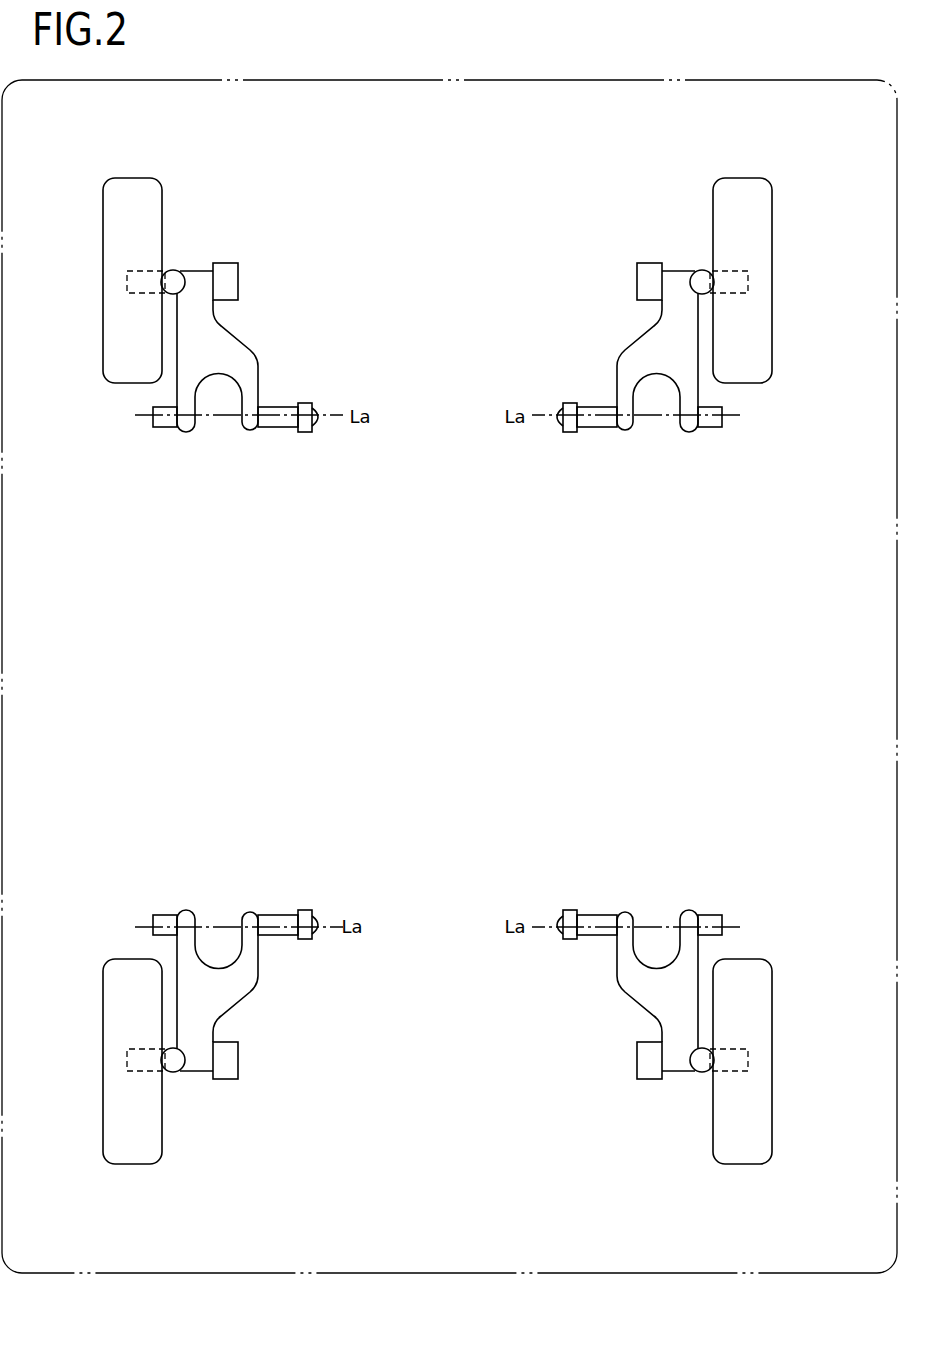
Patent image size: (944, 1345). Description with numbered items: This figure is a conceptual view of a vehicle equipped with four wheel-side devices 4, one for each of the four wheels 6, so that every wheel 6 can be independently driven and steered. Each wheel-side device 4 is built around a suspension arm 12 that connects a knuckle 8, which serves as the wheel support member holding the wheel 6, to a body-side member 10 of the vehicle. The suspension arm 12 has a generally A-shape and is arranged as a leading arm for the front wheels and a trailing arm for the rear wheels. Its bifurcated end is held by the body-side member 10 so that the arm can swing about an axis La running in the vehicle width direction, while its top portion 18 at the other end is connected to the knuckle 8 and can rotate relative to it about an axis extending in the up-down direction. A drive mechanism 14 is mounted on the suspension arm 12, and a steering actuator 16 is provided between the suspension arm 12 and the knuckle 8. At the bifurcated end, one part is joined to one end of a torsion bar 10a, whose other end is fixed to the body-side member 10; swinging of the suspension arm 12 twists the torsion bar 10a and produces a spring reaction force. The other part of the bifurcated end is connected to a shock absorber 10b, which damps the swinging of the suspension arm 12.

The wheel-side device 4 is at (438, 670).
The wheel 6 is at (437, 670).
The knuckle 8 is at (437, 670).
The body-side member 10 is at (440, 672).
The torsion bar 10a is at (437, 671).
The shock absorber 10b is at (440, 671).
The suspension arm 12 is at (438, 671).
The drive mechanism 14 is at (437, 675).
The steering actuator 16 is at (437, 670).
The top portion 18 is at (437, 670).